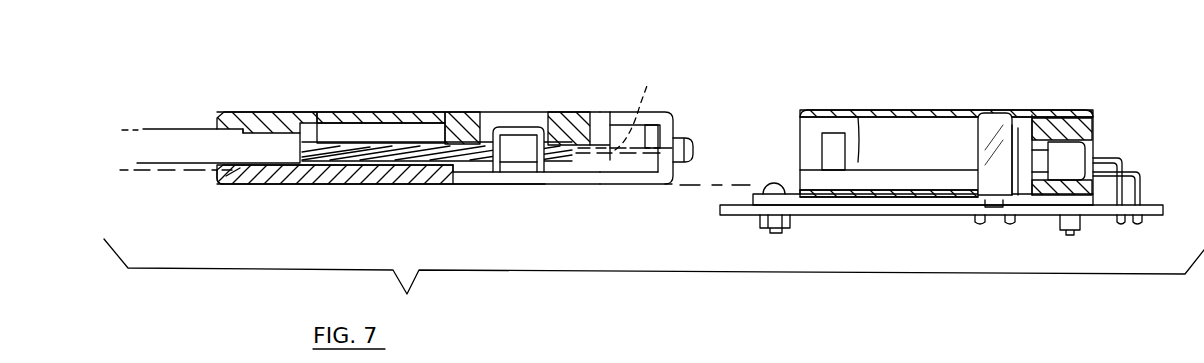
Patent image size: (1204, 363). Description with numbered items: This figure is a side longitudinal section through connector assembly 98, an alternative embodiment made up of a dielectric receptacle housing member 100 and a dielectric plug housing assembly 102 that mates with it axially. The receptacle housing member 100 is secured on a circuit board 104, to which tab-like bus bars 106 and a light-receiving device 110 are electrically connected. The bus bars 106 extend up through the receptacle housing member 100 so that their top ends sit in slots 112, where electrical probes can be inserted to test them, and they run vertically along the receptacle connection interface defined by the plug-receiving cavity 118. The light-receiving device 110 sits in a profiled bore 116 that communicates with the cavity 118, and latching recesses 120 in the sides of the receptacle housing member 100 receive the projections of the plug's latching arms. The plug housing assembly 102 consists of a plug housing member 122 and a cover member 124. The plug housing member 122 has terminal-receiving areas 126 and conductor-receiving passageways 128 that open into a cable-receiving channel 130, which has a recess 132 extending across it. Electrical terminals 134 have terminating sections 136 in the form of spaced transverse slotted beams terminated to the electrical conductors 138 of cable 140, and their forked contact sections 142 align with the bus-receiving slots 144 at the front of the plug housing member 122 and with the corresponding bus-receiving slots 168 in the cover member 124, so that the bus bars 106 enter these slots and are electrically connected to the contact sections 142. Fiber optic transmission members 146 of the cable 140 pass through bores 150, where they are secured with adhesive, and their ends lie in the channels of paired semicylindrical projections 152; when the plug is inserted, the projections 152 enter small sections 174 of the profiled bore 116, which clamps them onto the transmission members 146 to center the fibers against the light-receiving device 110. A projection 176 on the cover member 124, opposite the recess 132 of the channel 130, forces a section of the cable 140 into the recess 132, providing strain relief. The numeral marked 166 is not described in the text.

The connector assembly 98 is at (727, 80).
The receptacle housing member 100 is at (942, 103).
The plug housing assembly 102 is at (436, 112).
The circuit board 104 is at (1150, 216).
The bus bars 106 is at (992, 122).
The light-receiving device 110 is at (1073, 155).
The slots 112 is at (1060, 110).
The profiled bore 116 is at (1068, 182).
The plug-receiving cavity 118 is at (892, 132).
The latching recesses 120 is at (825, 148).
The plug housing member 122 is at (420, 185).
The cover member 124 is at (373, 110).
The terminal-receiving areas 126 is at (515, 170).
The conductor-receiving passageways 128 is at (387, 165).
The cable-receiving channel 130 is at (283, 175).
The recess 132 is at (247, 175).
The electrical terminals 134 is at (560, 183).
The terminating sections 136 is at (522, 126).
The electrical conductors 138 is at (338, 141).
The cable 140 is at (170, 148).
The forked contact sections 142 is at (610, 178).
The bus-receiving slots 144 is at (636, 186).
The fiber optic transmission members 146 is at (640, 105).
The bores 150 is at (683, 129).
The semicylindrical projections 152 is at (687, 162).
The insulating spacer 166 is at (467, 126).
The bus-receiving slots 168 is at (597, 132).
The small sections 174 is at (1037, 165).
The projection 176 is at (253, 135).